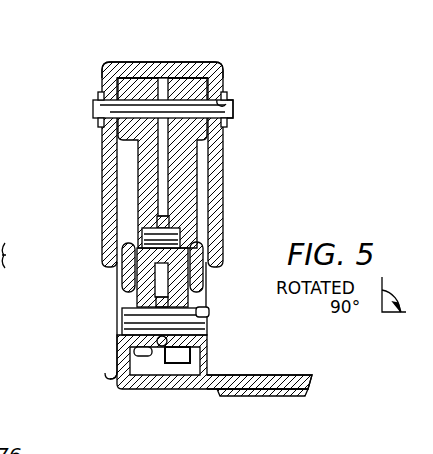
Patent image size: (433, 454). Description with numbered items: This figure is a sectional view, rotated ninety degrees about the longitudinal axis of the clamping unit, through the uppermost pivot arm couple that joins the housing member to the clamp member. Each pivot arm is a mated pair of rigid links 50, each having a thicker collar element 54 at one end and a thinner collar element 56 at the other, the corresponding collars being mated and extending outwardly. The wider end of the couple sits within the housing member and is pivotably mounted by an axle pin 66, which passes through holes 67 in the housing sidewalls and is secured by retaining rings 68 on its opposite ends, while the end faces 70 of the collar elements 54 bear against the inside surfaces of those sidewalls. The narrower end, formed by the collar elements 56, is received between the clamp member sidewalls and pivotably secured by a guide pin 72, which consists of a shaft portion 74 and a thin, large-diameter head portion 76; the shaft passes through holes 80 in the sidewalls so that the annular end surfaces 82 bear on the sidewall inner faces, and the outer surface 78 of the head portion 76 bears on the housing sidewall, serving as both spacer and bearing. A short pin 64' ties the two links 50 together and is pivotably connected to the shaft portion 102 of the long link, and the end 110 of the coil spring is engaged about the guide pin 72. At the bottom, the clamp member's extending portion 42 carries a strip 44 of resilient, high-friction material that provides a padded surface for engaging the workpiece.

The extending portion 42 is at (312, 373).
The strip 44 is at (288, 392).
The link 50 is at (166, 175).
The collar element 54 is at (135, 133).
The collar element 56 is at (185, 341).
The pin 64' is at (117, 241).
The axle pin 66 is at (171, 108).
The holes 67 is at (222, 100).
The retaining rings 68 is at (236, 113).
The end faces 70 is at (98, 72).
The guide pin 72 is at (110, 347).
The shaft portion 74 is at (212, 322).
The head portion 76 is at (117, 306).
The outer surface 78 is at (112, 380).
The holes 80 is at (212, 308).
The annular end surfaces 82 is at (127, 298).
The shaft portion 102 is at (170, 218).
The end 110 is at (176, 362).